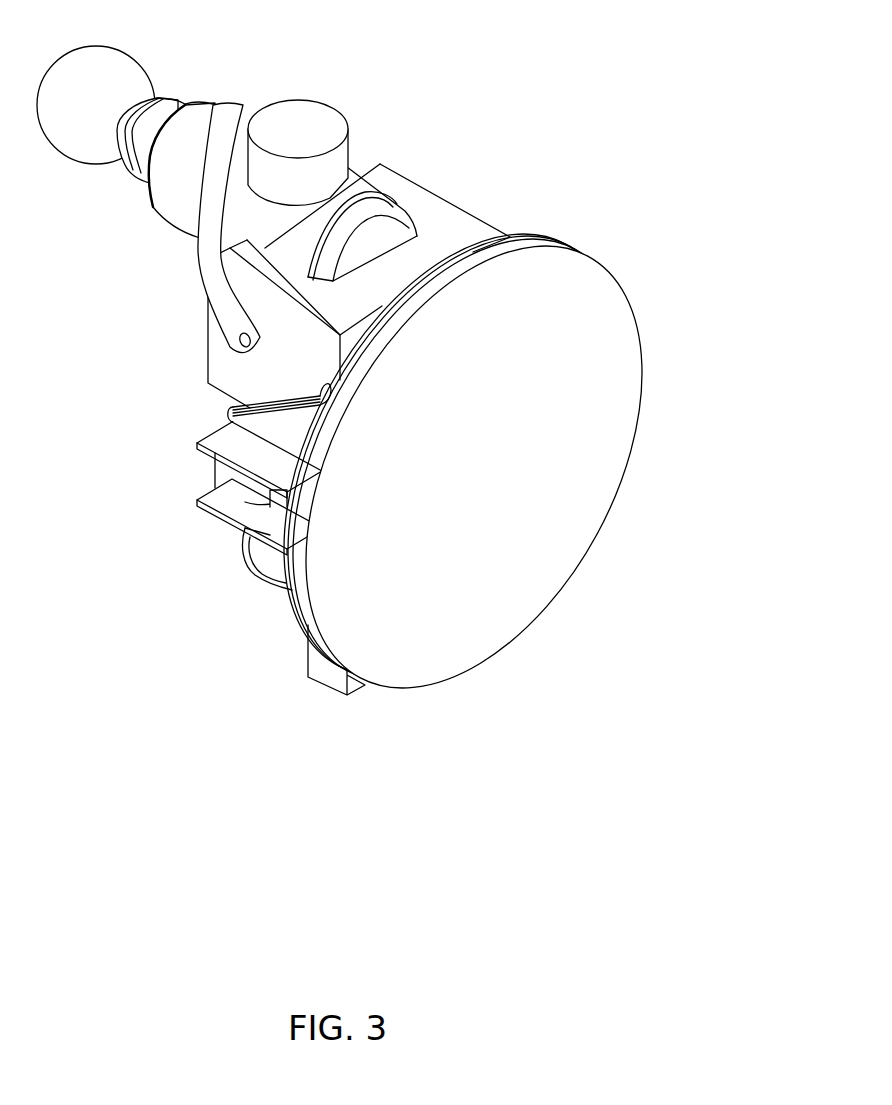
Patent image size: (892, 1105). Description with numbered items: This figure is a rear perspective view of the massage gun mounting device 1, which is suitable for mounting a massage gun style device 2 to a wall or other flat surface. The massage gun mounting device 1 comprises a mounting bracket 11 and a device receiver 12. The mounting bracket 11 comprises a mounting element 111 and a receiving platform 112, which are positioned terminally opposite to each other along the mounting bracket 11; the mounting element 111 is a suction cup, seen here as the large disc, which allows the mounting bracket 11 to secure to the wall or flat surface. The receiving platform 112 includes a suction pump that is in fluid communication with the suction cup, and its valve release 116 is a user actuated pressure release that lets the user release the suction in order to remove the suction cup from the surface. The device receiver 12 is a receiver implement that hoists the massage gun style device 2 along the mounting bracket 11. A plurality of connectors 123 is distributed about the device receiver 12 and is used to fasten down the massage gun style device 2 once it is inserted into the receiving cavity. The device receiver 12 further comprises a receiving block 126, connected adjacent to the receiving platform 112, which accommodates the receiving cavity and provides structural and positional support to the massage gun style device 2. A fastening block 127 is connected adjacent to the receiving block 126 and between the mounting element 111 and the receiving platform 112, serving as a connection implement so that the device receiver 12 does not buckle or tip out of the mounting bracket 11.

The massage gun mounting device 1 is at (488, 77).
The massage gun style device 2 is at (143, 62).
The mounting bracket 11 is at (582, 232).
The mounting element 111 is at (606, 267).
The device receiver 12 is at (423, 147).
The receiving platform 112 is at (211, 521).
The valve release 116 is at (212, 468).
The connectors 123 is at (246, 102).
The receiving block 126 is at (459, 209).
The fastening block 127 is at (306, 676).